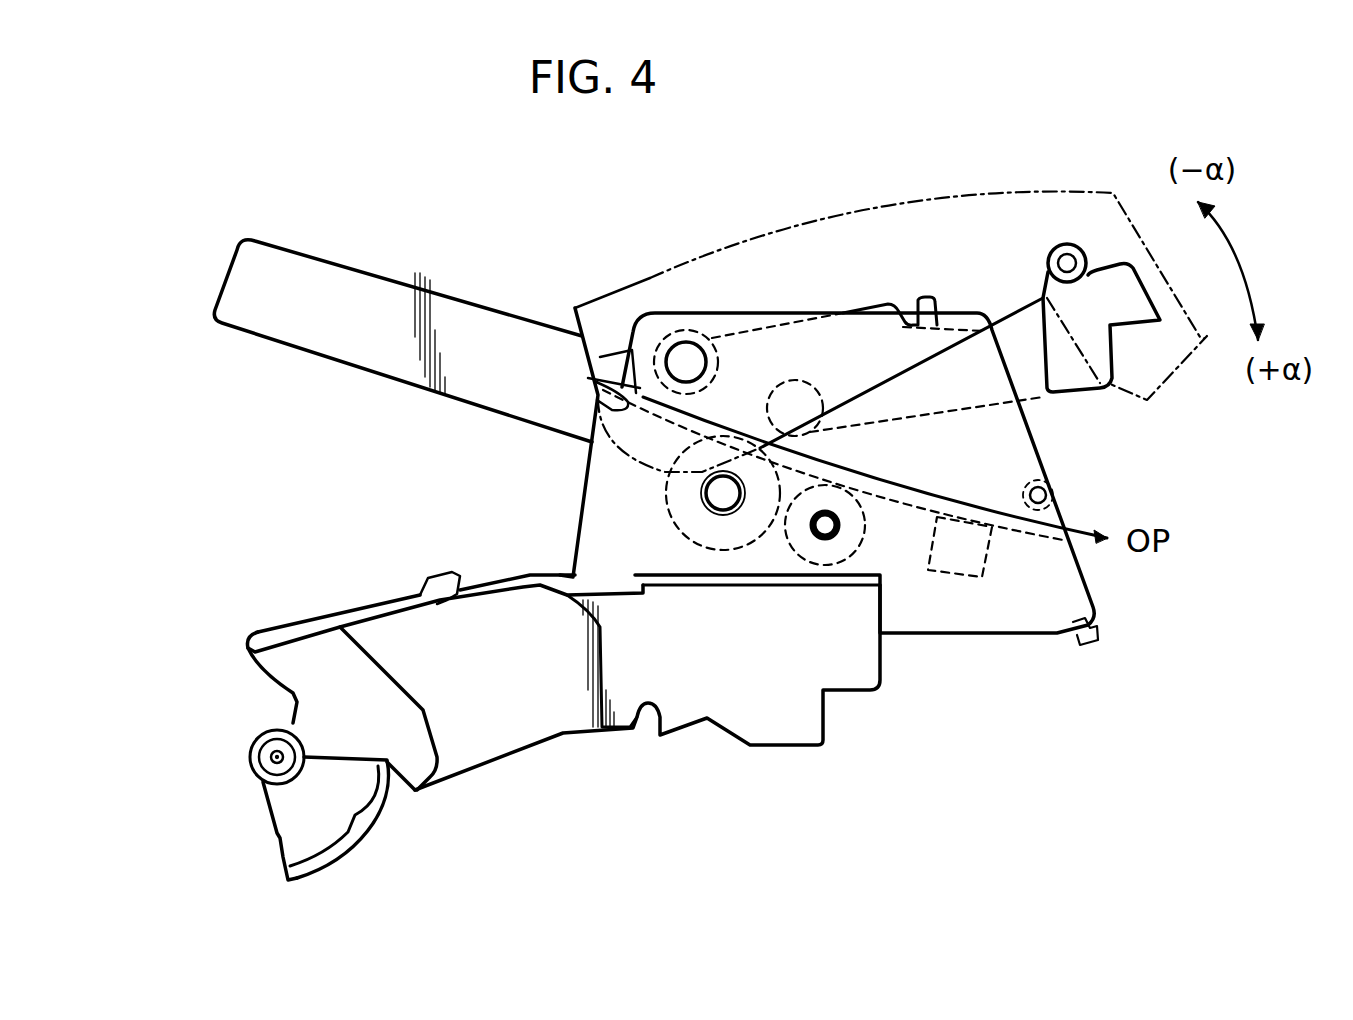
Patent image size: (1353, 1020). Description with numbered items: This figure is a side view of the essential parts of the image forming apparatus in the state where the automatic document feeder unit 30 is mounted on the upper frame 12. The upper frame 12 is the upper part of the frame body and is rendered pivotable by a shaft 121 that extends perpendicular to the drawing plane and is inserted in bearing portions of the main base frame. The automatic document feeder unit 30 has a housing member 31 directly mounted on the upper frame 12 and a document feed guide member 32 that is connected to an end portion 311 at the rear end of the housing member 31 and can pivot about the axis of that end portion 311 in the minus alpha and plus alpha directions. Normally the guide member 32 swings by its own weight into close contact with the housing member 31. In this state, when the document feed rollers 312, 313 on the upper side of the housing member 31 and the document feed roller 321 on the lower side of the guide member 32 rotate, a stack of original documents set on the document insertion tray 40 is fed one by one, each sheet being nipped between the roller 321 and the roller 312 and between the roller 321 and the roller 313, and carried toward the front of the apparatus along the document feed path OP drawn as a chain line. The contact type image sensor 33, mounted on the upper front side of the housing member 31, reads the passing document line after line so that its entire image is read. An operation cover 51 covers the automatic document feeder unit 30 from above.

The upper frame 12 is at (520, 726).
The shaft 121 is at (262, 758).
The automatic document feeder unit 30 is at (861, 410).
The housing member 31 is at (1022, 463).
The end portion 311 is at (686, 355).
The document feed roller 312 is at (703, 550).
The document feed roller 313 is at (798, 560).
The document feed guide member 32 is at (1080, 363).
The document feed roller 321 is at (803, 377).
The contact type image sensor 33 is at (955, 578).
The document insertion tray 40 is at (365, 275).
The operation cover 51 is at (740, 243).